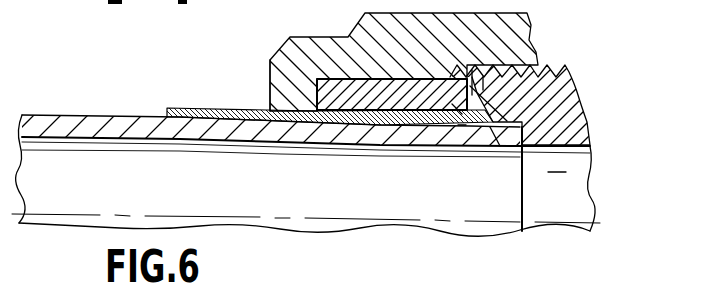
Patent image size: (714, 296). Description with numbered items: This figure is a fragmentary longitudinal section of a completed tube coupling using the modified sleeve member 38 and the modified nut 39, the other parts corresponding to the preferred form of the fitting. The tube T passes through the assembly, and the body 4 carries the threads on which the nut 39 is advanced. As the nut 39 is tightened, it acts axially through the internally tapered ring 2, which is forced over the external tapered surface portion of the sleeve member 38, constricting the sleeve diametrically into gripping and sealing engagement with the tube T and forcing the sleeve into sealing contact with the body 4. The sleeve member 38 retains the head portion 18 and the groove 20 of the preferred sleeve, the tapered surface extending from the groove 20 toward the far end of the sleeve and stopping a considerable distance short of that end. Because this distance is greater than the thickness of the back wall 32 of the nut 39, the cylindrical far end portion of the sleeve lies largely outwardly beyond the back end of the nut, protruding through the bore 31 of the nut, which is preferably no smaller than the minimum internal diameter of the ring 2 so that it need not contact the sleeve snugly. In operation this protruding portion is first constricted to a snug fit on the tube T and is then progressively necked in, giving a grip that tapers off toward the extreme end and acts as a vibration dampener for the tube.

The tube T is at (73, 117).
The ring 2 is at (352, 95).
The body 4 is at (577, 93).
The head portion 18 is at (497, 138).
The groove 20 is at (456, 110).
The sleeve member 38 is at (462, 113).
The nut 39 is at (280, 47).
The bore 31 is at (270, 105).
The back wall 32 is at (270, 67).